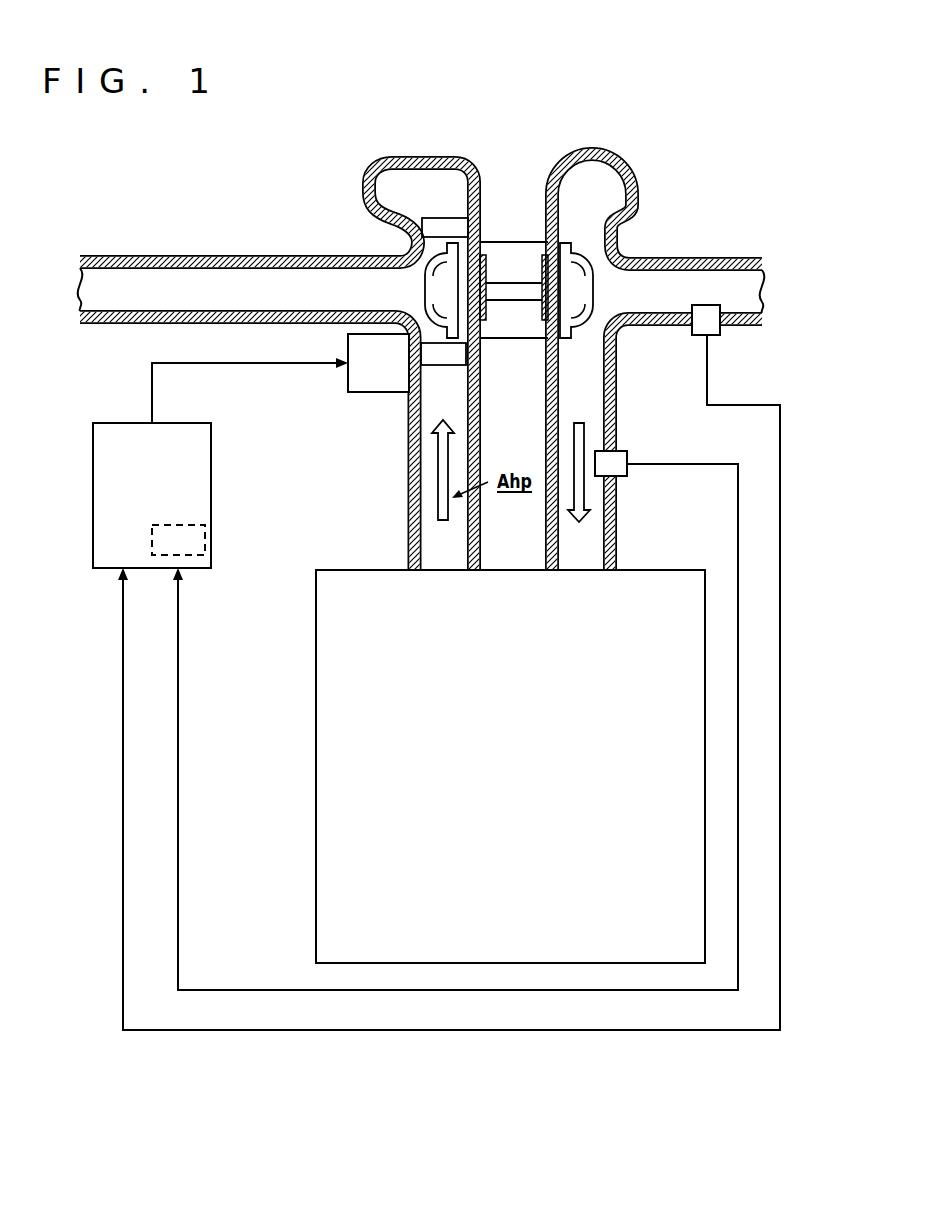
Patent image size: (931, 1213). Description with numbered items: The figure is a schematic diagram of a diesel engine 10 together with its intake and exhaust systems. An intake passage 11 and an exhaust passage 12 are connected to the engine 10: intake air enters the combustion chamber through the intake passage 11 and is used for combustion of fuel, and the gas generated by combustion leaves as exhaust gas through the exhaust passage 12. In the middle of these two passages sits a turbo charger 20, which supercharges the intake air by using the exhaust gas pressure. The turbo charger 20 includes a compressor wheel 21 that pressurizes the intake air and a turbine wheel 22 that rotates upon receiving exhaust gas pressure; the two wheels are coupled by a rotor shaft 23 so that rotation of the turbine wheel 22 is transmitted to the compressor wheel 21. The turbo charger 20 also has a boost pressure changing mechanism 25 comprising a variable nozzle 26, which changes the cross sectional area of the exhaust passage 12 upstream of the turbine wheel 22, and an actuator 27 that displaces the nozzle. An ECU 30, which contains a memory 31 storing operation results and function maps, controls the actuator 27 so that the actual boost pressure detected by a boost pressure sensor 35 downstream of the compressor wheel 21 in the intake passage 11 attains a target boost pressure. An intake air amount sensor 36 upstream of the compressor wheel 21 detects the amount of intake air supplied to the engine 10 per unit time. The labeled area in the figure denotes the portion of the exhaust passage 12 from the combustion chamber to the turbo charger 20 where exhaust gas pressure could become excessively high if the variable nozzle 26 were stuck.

The engine 10 is at (326, 556).
The intake passage 11 is at (716, 270).
The exhaust passage 12 is at (258, 268).
The turbo charger 20 is at (508, 254).
The compressor wheel 21 is at (580, 292).
The turbine wheel 22 is at (440, 292).
The rotor shaft 23 is at (512, 292).
The boost pressure changing mechanism 25 is at (403, 409).
The variable nozzle 26 is at (446, 228).
The actuator 27 is at (348, 382).
The ECU 30 is at (93, 462).
The memory 31 is at (207, 540).
The boost pressure sensor 35 is at (626, 450).
The intake air amount sensor 36 is at (722, 336).